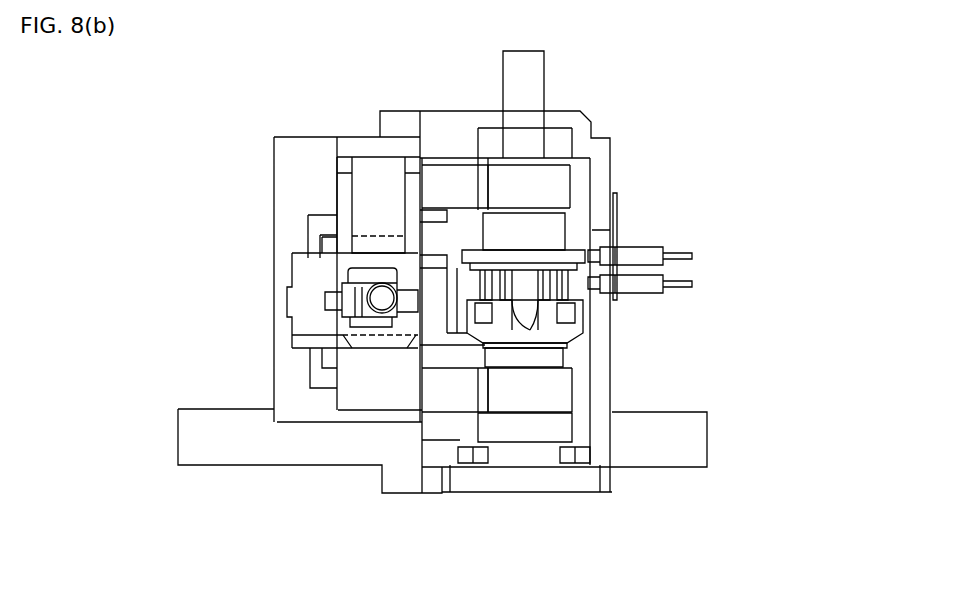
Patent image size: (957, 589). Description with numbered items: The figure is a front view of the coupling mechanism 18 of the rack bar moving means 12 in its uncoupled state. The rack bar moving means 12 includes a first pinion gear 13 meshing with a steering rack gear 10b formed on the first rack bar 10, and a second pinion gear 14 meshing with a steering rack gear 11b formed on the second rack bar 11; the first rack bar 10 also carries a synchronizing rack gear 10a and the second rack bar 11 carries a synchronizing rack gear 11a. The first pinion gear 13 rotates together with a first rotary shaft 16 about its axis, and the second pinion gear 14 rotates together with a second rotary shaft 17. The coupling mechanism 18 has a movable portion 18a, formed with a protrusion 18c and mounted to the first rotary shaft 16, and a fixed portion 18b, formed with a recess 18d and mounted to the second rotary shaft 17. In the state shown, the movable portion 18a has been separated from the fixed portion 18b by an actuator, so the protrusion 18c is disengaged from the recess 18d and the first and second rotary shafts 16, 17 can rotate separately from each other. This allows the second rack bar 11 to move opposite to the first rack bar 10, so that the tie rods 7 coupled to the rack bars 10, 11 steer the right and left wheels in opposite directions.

The tie rod 7 is at (378, 302).
The rack bar 10 is at (377, 185).
The synchronizing rack gear 10a is at (370, 237).
The steering rack gear 10b is at (481, 183).
The rack bar 11 is at (397, 387).
The synchronizing rack gear 11a is at (375, 330).
The steering rack gear 11b is at (483, 390).
The rack bar moving means 12 is at (582, 104).
The first pinion gear 13 is at (555, 186).
The second pinion gear 14 is at (549, 390).
The first rotary shaft 16 is at (535, 65).
The second rotary shaft 17 is at (525, 362).
The coupling mechanism 18 is at (713, 188).
The movable portion 18a is at (527, 265).
The fixed portion 18b is at (548, 307).
The protrusion 18c is at (577, 326).
The recess 18d is at (583, 344).